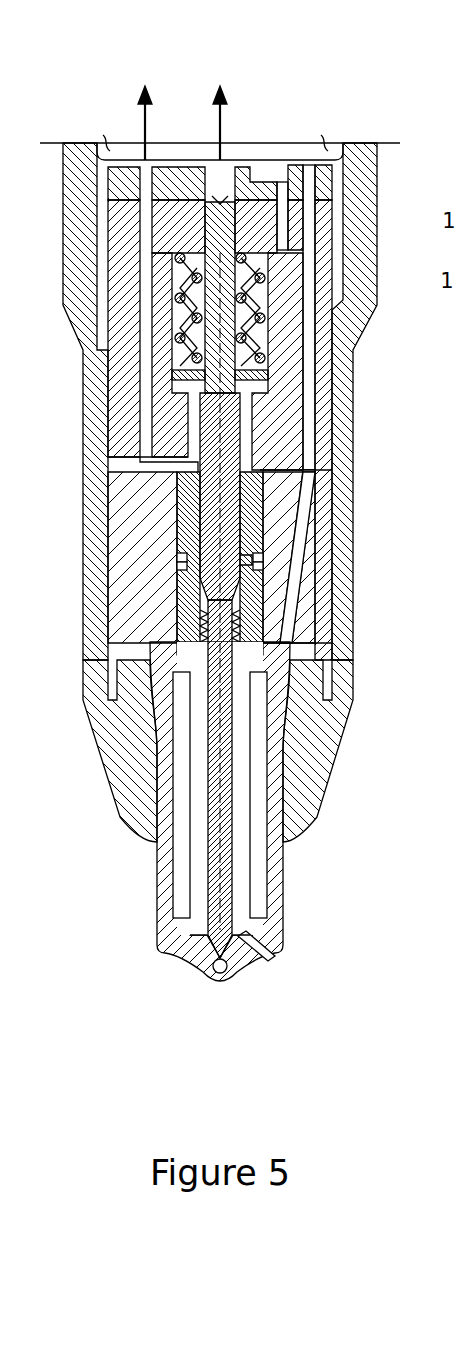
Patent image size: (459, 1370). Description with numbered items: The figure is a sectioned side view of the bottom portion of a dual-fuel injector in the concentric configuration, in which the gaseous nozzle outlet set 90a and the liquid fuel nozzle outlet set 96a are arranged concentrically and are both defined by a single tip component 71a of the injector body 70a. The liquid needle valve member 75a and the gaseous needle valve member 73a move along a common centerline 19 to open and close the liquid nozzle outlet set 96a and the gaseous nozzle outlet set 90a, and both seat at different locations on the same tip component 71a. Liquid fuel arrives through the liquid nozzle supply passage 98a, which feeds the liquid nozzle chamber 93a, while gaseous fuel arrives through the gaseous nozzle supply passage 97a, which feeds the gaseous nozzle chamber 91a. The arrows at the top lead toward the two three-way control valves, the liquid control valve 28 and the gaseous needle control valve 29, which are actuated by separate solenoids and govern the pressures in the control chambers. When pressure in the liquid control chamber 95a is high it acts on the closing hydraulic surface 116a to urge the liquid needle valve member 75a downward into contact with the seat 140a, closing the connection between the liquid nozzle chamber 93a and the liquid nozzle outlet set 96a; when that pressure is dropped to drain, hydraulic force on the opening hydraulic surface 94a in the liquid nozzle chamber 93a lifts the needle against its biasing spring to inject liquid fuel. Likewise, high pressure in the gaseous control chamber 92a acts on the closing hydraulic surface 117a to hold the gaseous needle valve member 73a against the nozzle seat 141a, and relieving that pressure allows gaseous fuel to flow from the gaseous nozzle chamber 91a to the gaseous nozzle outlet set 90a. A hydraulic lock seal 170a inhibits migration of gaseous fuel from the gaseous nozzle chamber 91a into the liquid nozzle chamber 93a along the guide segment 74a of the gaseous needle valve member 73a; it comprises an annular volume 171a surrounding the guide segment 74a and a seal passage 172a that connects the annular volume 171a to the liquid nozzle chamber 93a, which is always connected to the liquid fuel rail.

The common centerline 19 is at (223, 790).
The control valve 28 is at (220, 86).
The gaseous needle control valve 29 is at (145, 86).
The injector body 70a is at (355, 395).
The tip component 71a is at (287, 850).
The gaseous needle valve member 73a is at (190, 838).
The guide segment 74a is at (185, 563).
The liquid needle valve member 75a is at (290, 676).
The gaseous nozzle outlet set 90a is at (273, 960).
The gaseous nozzle chamber 91a is at (288, 742).
The gaseous control chamber 92a is at (237, 507).
The liquid nozzle chamber 93a is at (268, 560).
The opening hydraulic surface 94a is at (205, 272).
The liquid control chamber 95a is at (220, 198).
The liquid fuel nozzle outlet set 96a is at (237, 972).
The gaseous nozzle supply passage 97a is at (310, 287).
The liquid nozzle supply passage 98a is at (286, 195).
The closing hydraulic surface 116a is at (228, 200).
The closing hydraulic surface 117a is at (185, 462).
The seat 140a is at (193, 930).
The nozzle seat 141a is at (253, 913).
The hydraulic lock seal 170a is at (272, 612).
The annular volume 171a is at (180, 557).
The seal passage 172a is at (188, 567).